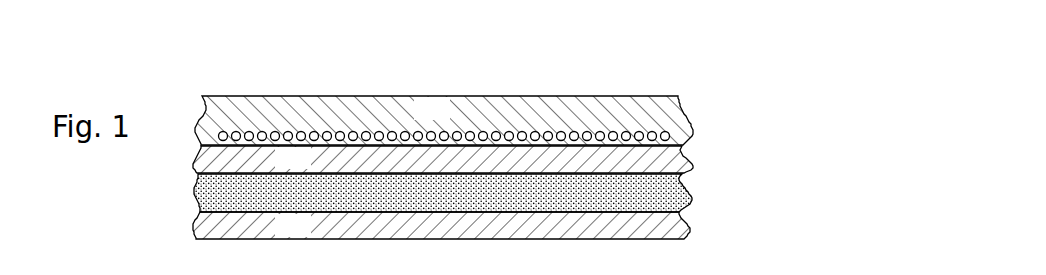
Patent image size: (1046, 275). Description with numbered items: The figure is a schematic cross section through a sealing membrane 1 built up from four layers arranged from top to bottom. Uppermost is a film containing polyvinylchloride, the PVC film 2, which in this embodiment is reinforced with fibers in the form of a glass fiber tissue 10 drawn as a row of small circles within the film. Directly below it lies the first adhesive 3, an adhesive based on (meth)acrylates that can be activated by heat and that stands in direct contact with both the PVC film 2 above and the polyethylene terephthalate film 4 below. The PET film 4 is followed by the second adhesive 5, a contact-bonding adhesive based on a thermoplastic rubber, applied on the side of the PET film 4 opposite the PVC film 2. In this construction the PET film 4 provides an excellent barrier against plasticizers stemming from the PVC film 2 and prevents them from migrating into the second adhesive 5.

The sealing membrane 1 is at (214, 77).
The film (F1) containing polyvinylchloride 2 is at (660, 115).
The glass fiber tissue 10 is at (684, 130).
The first adhesive (K1) 3 is at (688, 165).
The polyethylene terephthalate film (F2) 4 is at (690, 197).
The second adhesive (K2) 5 is at (688, 228).